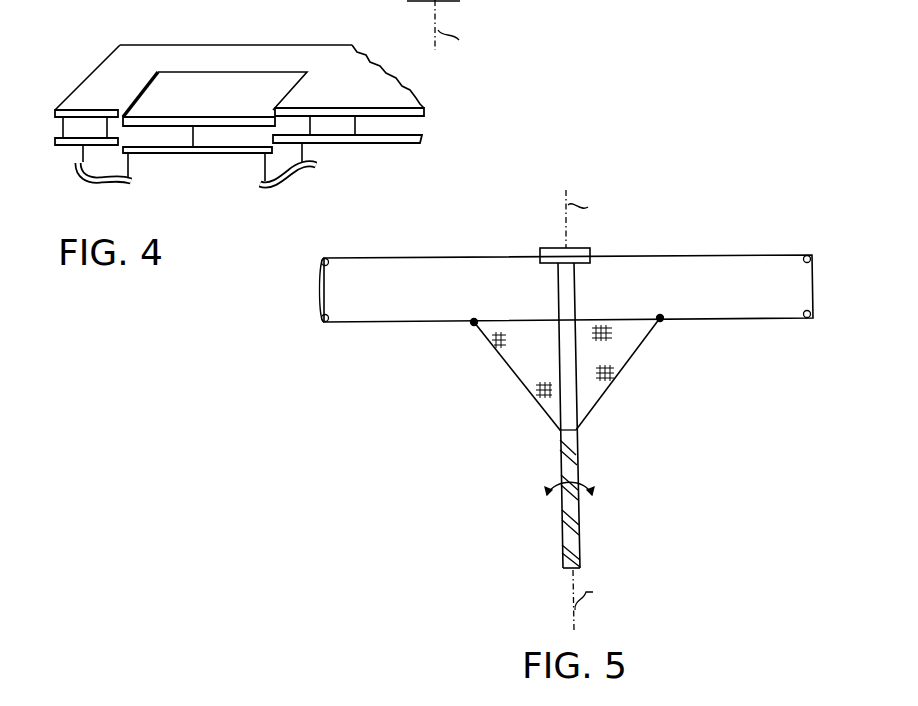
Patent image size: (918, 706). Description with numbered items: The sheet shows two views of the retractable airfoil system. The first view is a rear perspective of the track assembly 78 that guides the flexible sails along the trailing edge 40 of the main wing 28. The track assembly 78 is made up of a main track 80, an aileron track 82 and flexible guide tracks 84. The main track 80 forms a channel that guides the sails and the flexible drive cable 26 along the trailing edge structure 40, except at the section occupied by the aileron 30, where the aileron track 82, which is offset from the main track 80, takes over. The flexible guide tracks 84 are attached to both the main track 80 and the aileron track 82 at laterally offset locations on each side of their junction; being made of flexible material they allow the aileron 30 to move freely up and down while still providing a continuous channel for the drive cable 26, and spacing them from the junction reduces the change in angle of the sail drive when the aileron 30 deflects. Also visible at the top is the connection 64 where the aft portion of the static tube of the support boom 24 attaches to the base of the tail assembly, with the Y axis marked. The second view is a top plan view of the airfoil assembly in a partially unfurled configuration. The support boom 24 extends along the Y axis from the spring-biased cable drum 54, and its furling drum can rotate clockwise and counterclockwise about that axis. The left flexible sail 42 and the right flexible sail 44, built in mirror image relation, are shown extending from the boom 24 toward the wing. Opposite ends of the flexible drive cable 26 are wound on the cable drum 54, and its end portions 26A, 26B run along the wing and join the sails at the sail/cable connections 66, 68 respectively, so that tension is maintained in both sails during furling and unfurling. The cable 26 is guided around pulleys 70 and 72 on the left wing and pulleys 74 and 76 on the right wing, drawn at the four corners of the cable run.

In FIG. 5, the support boom 24 is at (578, 286).
In FIG. 5, the flexible drive cable 26 is at (420, 258).
In FIG. 5, the sail drive cable end portion 26A is at (412, 323).
In FIG. 5, the sail drive cable end portion 26B is at (716, 319).
In FIG. 4, the wing 28 is at (200, 64).
In FIG. 4, the aileron 30 is at (173, 100).
In FIG. 4, the trailing edge 40 is at (392, 145).
In FIG. 5, the left flexible sail 42 is at (526, 364).
In FIG. 5, the right flexible sail 44 is at (612, 360).
In FIG. 5, the spring-biased cable drum 54 is at (540, 249).
In FIG. 4, the connection 64 is at (424, 3).
In FIG. 5, the sail/cable connection 66 is at (473, 320).
In FIG. 5, the sail/cable connection 68 is at (661, 317).
In FIG. 5, the pulley 70 is at (323, 259).
In FIG. 5, the pulley 72 is at (325, 322).
In FIG. 5, the pulley 74 is at (803, 259).
In FIG. 5, the pulley 76 is at (808, 316).
In FIG. 4, the track assembly 78 is at (430, 126).
In FIG. 4, the main track 80 is at (63, 131).
In FIG. 4, the aileron track 82 is at (181, 133).
In FIG. 4, the flexible guide tracks 84 is at (100, 175).